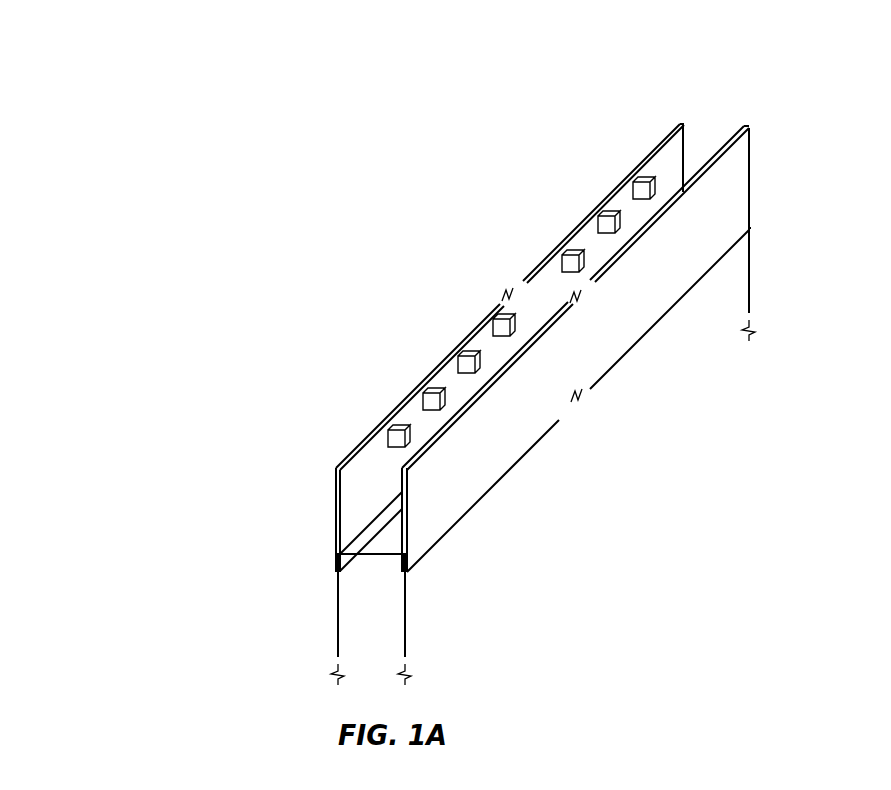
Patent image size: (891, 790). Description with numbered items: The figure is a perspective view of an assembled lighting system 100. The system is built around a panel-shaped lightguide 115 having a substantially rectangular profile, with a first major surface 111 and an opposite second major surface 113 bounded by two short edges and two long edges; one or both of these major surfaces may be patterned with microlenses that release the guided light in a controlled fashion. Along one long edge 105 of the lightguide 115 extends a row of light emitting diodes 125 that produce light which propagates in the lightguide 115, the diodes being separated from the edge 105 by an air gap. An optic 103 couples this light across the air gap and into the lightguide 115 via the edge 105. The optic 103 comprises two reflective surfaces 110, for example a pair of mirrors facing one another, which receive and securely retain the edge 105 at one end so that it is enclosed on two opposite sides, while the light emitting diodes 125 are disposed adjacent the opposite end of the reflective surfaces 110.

The lighting system 100 is at (545, 107).
The optic 103 is at (312, 503).
The edge 105 is at (371, 581).
The reflective surfaces 110 is at (673, 153).
The first major surface 111 is at (447, 618).
The second major surface 113 is at (323, 642).
The lightguide 115 is at (582, 532).
The light emitting diodes 125 is at (537, 263).